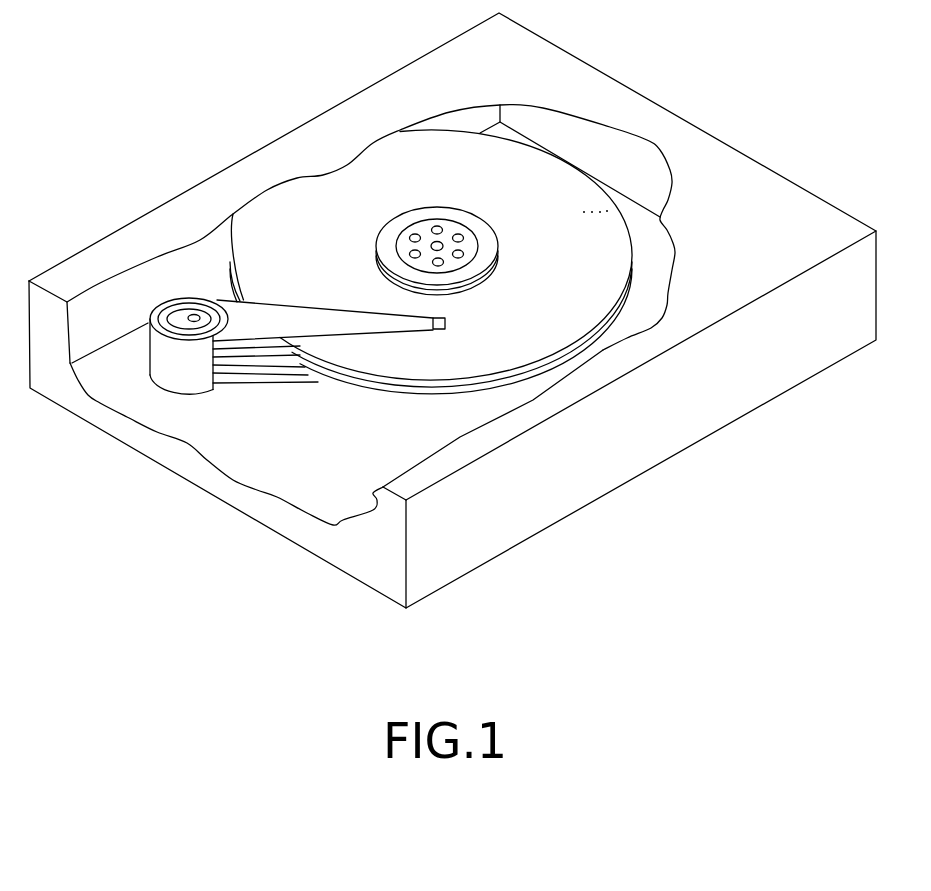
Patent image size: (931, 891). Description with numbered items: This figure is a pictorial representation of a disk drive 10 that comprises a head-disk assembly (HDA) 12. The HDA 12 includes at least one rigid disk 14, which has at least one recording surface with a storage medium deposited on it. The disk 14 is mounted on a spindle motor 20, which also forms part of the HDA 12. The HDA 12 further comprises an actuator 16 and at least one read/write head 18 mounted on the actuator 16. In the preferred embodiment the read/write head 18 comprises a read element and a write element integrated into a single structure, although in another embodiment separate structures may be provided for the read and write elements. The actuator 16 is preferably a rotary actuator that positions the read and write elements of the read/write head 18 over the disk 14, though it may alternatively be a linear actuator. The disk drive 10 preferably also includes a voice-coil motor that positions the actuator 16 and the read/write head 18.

The disk drive 10 is at (703, 528).
The head-disk assembly 12 is at (285, 407).
The rigid disk 14 is at (363, 364).
The actuator 16 is at (307, 317).
The read/write head 18 is at (447, 323).
The spindle motor 20 is at (440, 243).